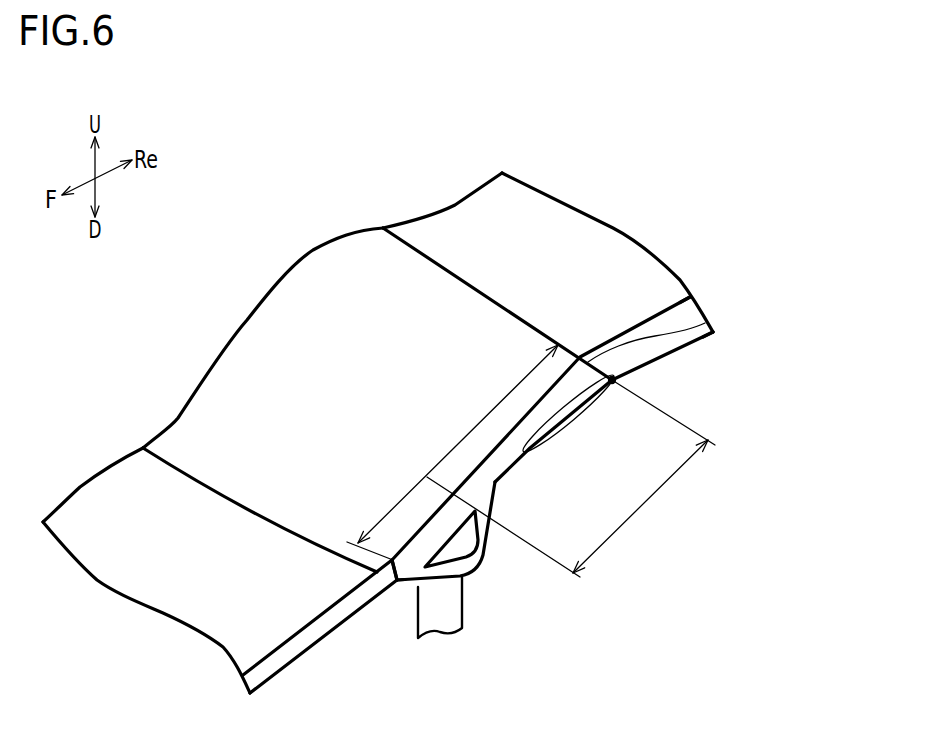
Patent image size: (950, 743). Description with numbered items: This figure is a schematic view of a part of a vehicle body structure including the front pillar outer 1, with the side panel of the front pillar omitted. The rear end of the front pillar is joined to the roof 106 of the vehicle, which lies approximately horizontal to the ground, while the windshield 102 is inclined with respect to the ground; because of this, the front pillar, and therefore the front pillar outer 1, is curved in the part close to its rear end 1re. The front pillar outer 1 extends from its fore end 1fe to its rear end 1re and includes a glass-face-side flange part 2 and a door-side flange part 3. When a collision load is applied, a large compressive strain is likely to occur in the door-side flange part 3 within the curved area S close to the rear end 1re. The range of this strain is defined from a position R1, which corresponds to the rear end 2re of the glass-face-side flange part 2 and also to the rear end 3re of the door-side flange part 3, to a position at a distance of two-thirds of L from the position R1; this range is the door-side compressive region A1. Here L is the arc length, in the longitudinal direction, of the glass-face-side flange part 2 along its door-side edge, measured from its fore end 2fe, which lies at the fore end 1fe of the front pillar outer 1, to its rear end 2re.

The front pillar outer 1 is at (550, 593).
The glass-face-side flange part 2 is at (442, 512).
The door-side flange part 3 is at (517, 457).
The windshield 102 is at (267, 350).
The roof 106 is at (612, 267).
The position R1 is at (616, 380).
The curved area S is at (575, 420).
The arc length L is at (452, 452).
The door-side compressive region A1 is at (589, 478).
The fore end of the front pillar outer 1fe is at (387, 565).
The fore end of the glass-face-side flange part 2fe is at (401, 580).
The rear end of the front pillar outer 1re is at (705, 323).
The rear end of the glass-face-side flange part 2re is at (685, 300).
The rear end of the door-side flange part 3re is at (708, 334).